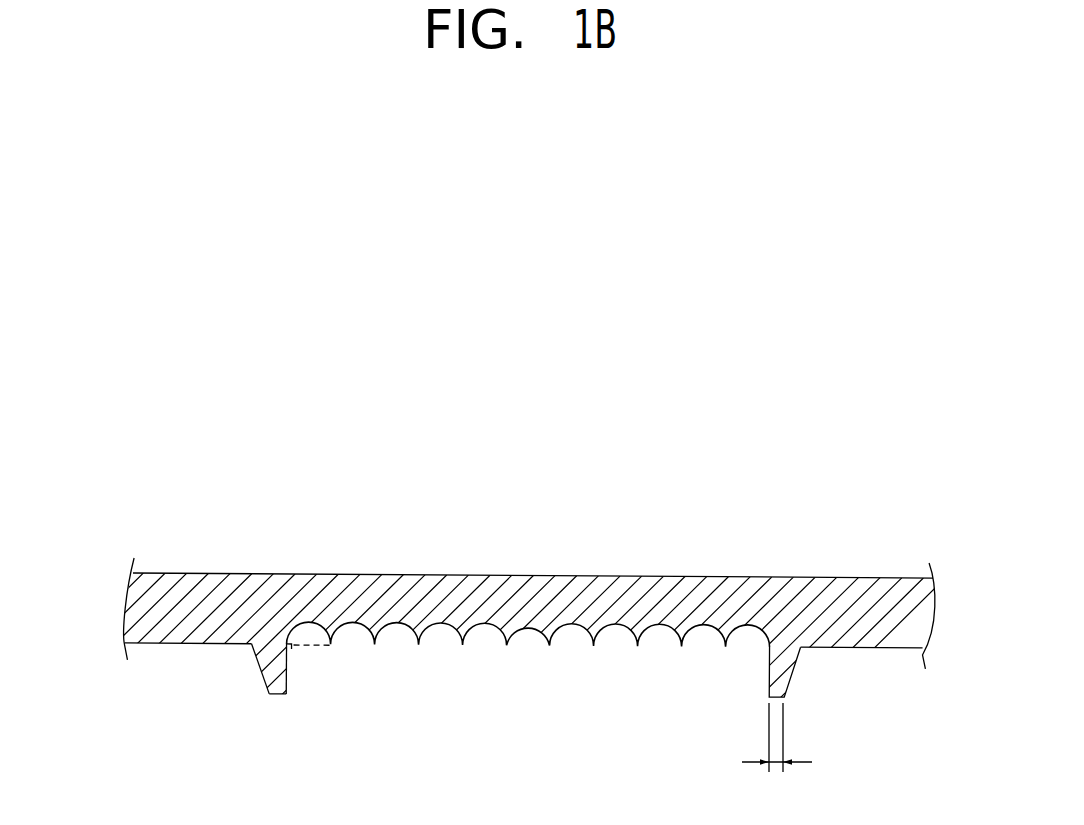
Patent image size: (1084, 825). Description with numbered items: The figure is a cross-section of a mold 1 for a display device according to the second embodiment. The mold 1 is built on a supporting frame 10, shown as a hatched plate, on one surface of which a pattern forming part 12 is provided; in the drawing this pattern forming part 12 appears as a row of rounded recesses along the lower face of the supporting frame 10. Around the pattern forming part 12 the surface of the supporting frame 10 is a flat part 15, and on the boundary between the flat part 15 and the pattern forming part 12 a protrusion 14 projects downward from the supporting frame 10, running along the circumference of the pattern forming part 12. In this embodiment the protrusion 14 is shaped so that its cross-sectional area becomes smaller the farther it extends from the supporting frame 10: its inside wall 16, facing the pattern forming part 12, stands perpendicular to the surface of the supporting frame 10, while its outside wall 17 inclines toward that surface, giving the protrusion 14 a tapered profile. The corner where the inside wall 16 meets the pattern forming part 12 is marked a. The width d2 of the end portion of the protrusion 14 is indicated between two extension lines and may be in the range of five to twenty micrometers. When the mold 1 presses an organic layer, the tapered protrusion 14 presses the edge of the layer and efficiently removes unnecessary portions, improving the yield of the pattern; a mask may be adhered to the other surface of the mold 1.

The mold 1 is at (774, 461).
The supporting frame 10 is at (130, 611).
The pattern forming part 12 is at (442, 622).
The protrusion 14 is at (278, 690).
The flat part 15 is at (186, 647).
The inside wall 16 is at (288, 675).
The outside wall 17 is at (262, 670).
The corner portion a is at (291, 648).
The width of the end portion of protrusion d2 is at (777, 750).